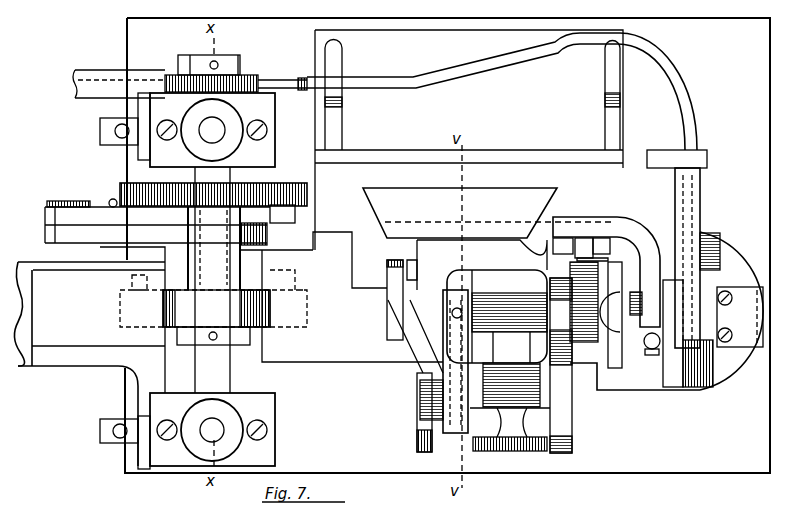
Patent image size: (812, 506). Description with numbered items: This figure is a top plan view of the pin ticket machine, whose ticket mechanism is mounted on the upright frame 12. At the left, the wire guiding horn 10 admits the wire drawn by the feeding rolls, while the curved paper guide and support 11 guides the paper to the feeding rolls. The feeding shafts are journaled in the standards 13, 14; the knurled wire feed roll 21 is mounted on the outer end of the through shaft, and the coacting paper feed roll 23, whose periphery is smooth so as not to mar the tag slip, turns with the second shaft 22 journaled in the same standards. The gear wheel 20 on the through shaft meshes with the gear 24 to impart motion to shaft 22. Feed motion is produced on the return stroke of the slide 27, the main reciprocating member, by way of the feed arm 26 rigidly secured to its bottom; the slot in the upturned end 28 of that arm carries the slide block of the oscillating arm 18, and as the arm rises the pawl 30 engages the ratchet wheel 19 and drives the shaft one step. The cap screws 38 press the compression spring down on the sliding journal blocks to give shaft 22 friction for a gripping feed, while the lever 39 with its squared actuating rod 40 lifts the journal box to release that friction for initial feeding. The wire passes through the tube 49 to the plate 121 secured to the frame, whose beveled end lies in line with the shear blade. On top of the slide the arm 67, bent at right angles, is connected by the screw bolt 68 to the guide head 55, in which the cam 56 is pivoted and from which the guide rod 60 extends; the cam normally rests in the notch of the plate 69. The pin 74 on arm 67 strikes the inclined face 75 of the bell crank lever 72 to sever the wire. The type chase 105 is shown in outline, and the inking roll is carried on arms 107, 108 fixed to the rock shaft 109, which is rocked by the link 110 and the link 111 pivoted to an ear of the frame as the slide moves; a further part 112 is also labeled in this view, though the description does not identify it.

The wire guiding horn 10 is at (93, 70).
The curved paper guide and support 11 is at (65, 314).
The upright frame 12 is at (395, 165).
The standard 13 is at (276, 160).
The standard 14 is at (278, 399).
The oscillating arm 18 is at (62, 232).
The ratchet wheel 19 is at (296, 217).
The gear wheel 20 is at (300, 195).
The wire feed roll 21 is at (273, 76).
The shaft 22 is at (232, 376).
The coacting paper feed roll 23 is at (270, 300).
The gear 24 is at (185, 184).
The feed arm 26 is at (253, 68).
The slide 27 is at (481, 189).
The upturned end 28 is at (112, 263).
The pawl 30 is at (70, 204).
The cap screws 38 is at (270, 130).
The lever 39 is at (114, 129).
The actuating rod 40 is at (99, 124).
The tube 49 is at (367, 77).
The guide head 55 is at (678, 377).
The cam 56 is at (697, 300).
The guide rod 60 is at (648, 352).
The arm 67 is at (617, 232).
The screw bolt 68 is at (636, 360).
The plate 69 is at (708, 218).
The bell crank lever 72 is at (602, 243).
The pin 74 is at (553, 240).
The inclined face 75 is at (567, 236).
The type chase 105 is at (546, 408).
The arm 107 is at (583, 349).
The arm 108 is at (397, 343).
The rock shaft 109 is at (492, 305).
The link 110 is at (452, 387).
The link 111 is at (400, 321).
The bracket 112 is at (366, 245).
The plate 121 is at (708, 167).